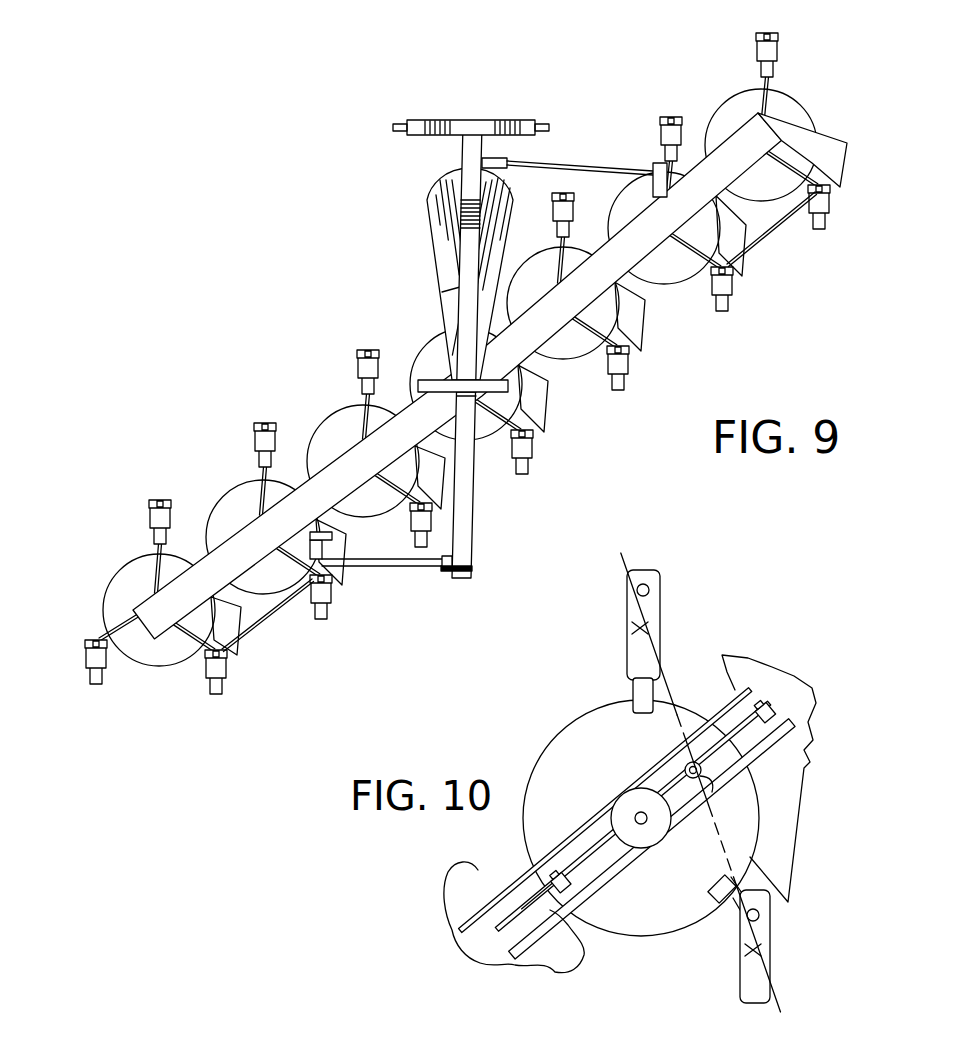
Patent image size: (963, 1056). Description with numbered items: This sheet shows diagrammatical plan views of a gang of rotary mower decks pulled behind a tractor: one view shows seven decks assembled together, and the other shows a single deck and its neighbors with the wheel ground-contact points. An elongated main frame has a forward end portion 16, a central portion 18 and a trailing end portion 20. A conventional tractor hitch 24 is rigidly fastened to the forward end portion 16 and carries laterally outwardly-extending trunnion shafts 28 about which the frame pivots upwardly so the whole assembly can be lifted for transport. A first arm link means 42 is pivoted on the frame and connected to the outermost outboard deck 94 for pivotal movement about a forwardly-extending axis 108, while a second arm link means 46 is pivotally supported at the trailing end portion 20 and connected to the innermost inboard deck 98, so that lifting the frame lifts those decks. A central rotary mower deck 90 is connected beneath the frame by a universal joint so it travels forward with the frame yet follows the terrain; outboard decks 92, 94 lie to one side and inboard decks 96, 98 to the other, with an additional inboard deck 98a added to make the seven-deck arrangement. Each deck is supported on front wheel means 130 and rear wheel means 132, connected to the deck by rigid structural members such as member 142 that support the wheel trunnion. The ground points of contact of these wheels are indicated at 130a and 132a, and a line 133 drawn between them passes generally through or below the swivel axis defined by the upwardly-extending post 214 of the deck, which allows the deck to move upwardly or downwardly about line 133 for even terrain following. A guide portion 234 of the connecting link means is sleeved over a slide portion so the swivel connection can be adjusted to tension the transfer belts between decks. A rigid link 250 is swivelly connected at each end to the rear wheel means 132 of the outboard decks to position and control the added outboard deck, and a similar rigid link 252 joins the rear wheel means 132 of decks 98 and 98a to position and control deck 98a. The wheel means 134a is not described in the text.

In FIG. 9, the forward end portion 16 is at (463, 158).
In FIG. 9, the central portion 18 is at (442, 292).
In FIG. 9, the trailing end portion 20 is at (468, 565).
In FIG. 9, the tractor hitch 24 is at (495, 117).
In FIG. 9, the trunnion shafts 28 is at (403, 120).
In FIG. 9, the first arm link means 42 is at (598, 165).
In FIG. 9, the second arm link means 46 is at (412, 568).
In FIG. 9, the central rotary mower deck 90 is at (483, 440).
In FIG. 10, the central rotary mower deck 90 is at (812, 740).
In FIG. 9, the outboard mower deck 92 is at (565, 375).
In FIG. 9, the outermost outboard mower deck 94 is at (660, 290).
In FIG. 9, the inboard mower deck 96 is at (322, 410).
In FIG. 10, the inboard mower deck 96 is at (684, 902).
In FIG. 9, the innermost inboard mower deck 98 is at (222, 498).
In FIG. 10, the innermost inboard mower deck 98 is at (475, 886).
In FIG. 9, the additional inboard deck 98a is at (147, 668).
In FIG. 9, the forwardly-extending pivot axis 108 is at (656, 162).
In FIG. 9, the front wheel means 130 is at (157, 495).
In FIG. 10, the front wheel means 130 is at (676, 600).
In FIG. 10, the ground point of contact of front wheel means 130a is at (633, 632).
In FIG. 9, the rear wheel means 132 is at (200, 705).
In FIG. 10, the rear wheel means 132 is at (792, 910).
In FIG. 10, the ground point of contact of rear wheel means 132a is at (762, 948).
In FIG. 10, the line between ground contact points 133 is at (622, 566).
In FIG. 9, the end nozzle 134a is at (98, 705).
In FIG. 9, the rigid structural member 142 is at (788, 112).
In FIG. 10, the post 214 is at (708, 787).
In FIG. 10, the guide portion 234 is at (705, 727).
In FIG. 9, the rigid link 250 is at (750, 235).
In FIG. 9, the rigid link 252 is at (251, 630).